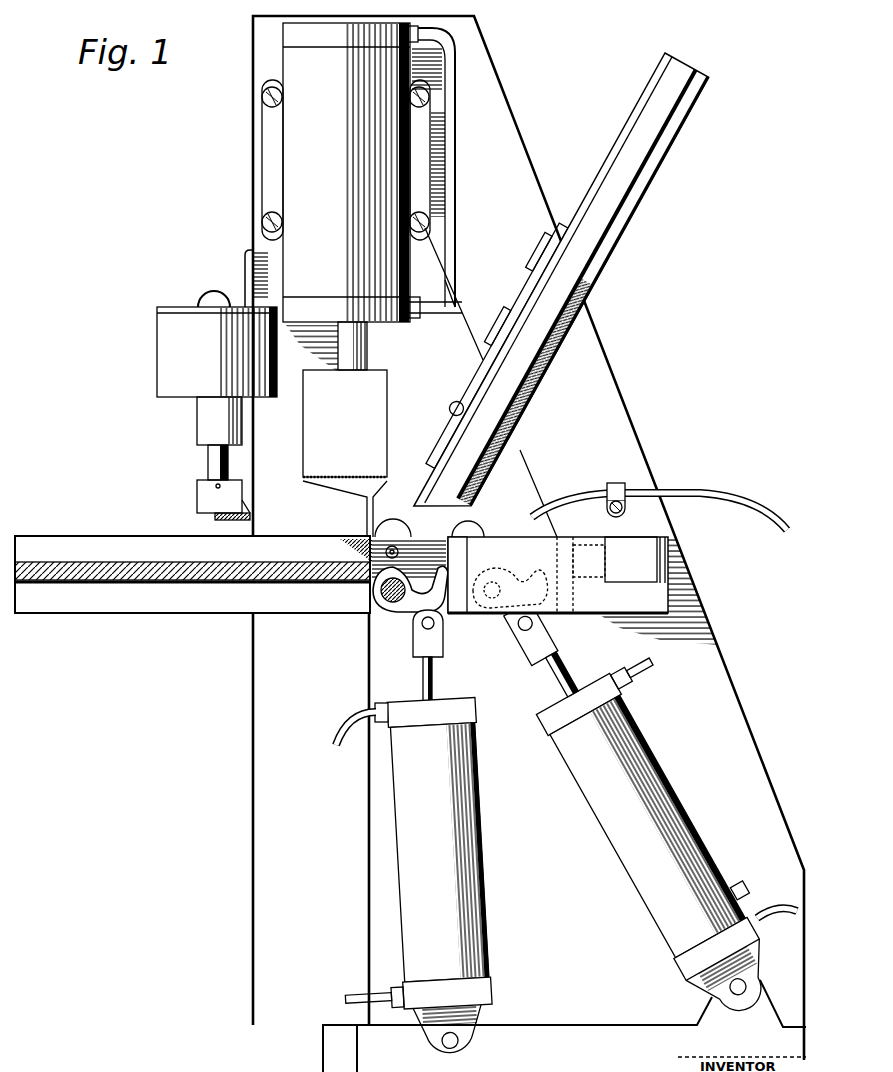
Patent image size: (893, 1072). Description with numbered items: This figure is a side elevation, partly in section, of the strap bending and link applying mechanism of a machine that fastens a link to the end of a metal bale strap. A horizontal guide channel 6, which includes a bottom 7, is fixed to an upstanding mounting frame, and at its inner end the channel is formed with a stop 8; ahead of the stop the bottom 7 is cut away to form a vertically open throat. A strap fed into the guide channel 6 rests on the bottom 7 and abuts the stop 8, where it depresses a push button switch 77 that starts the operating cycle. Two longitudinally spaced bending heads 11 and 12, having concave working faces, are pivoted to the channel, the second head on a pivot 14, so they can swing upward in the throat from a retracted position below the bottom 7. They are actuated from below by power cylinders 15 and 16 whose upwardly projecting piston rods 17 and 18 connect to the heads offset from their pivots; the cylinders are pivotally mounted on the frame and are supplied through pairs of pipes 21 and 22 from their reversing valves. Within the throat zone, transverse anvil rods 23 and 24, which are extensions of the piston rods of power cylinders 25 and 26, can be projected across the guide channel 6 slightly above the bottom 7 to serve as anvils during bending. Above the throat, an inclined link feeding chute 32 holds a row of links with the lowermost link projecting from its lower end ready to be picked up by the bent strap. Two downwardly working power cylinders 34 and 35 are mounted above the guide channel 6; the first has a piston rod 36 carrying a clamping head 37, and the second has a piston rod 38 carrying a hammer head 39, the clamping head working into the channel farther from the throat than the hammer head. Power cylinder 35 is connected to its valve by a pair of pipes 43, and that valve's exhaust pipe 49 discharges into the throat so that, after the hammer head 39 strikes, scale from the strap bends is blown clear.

The horizontal guide channel 6 is at (124, 600).
The bottom 7 is at (48, 563).
The stop 8 is at (563, 544).
The bending head 11 is at (533, 569).
The bending head 12 is at (432, 600).
The pivot 14 is at (380, 598).
The power cylinder 15 is at (663, 800).
The power cylinder 16 is at (487, 852).
The piston rod 17 is at (552, 673).
The piston rod 18 is at (437, 680).
The pipes 21 is at (770, 906).
The pipes 22 is at (342, 728).
The transverse anvil rod 23 is at (457, 536).
The transverse anvil rod 24 is at (366, 545).
The power cylinder 25 is at (478, 531).
The power cylinder 26 is at (387, 530).
The link feeding chute 32 is at (620, 183).
The power cylinder 34 is at (163, 357).
The power cylinder 35 is at (305, 152).
The piston rod 36 is at (208, 464).
The clamping head 37 is at (207, 503).
The piston rod 38 is at (368, 348).
The hammer head 39 is at (370, 446).
The pipes 43 is at (452, 150).
The exhaust pipe 49 is at (667, 488).
The push button switch 77 is at (573, 567).